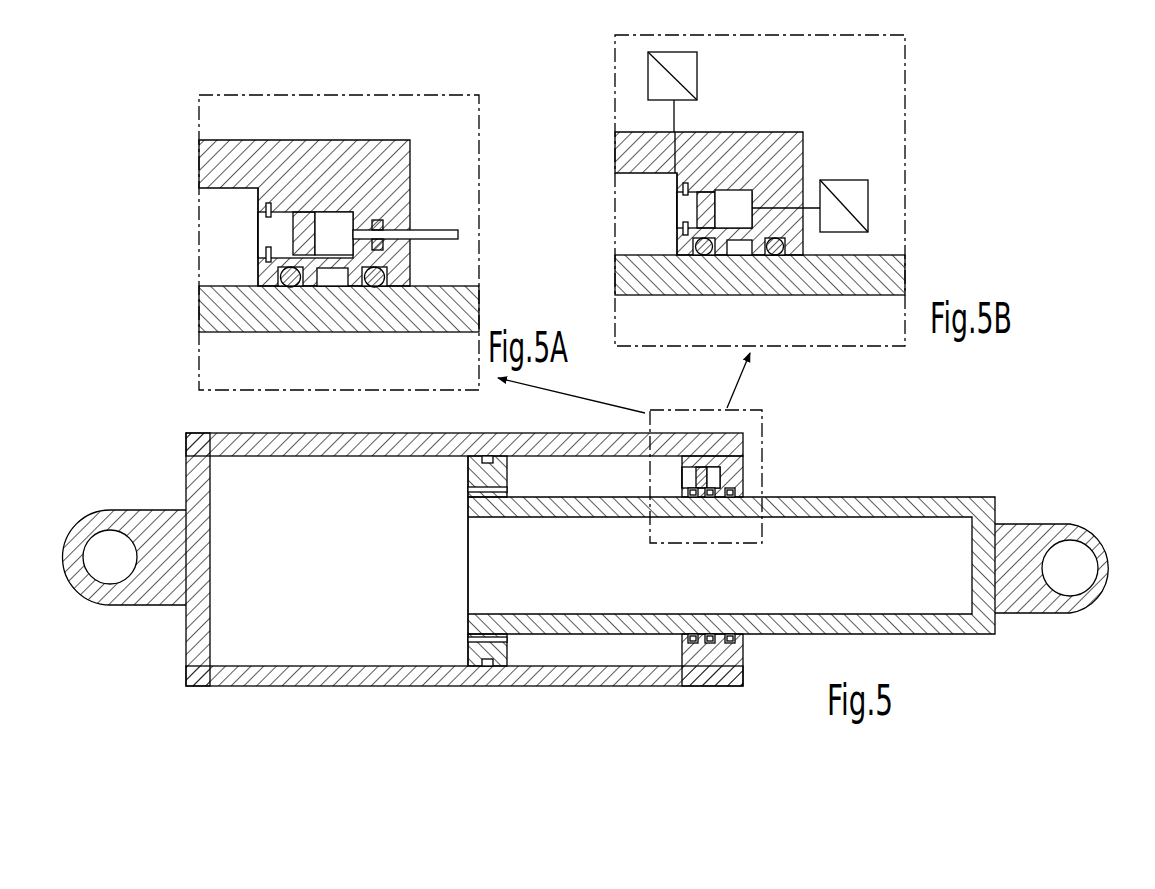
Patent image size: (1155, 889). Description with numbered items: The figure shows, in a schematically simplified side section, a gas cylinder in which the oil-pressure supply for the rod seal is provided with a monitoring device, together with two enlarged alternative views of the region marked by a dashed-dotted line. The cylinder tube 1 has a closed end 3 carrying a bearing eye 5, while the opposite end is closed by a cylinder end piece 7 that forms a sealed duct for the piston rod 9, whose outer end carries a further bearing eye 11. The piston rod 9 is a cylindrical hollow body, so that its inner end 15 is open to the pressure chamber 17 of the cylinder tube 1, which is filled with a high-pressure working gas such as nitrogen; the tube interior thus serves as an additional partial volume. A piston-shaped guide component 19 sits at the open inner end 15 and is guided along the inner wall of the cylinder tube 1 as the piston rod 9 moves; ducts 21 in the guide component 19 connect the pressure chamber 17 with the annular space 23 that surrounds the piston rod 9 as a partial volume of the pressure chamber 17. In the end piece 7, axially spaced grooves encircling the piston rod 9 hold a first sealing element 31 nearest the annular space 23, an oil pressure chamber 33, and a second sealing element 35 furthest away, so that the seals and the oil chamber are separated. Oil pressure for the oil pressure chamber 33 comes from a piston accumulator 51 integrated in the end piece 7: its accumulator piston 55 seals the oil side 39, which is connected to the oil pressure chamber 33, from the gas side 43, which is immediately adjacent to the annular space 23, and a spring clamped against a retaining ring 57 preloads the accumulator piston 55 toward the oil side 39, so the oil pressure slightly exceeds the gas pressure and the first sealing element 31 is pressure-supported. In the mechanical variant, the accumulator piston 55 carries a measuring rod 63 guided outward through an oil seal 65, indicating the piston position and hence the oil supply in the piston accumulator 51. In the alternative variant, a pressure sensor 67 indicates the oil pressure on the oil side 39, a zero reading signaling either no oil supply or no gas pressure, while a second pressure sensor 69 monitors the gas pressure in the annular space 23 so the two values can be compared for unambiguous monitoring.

In FIG. 5, the cylinder tube 1 is at (385, 444).
In FIG. 5A, the cylinder tube 1 is at (222, 166).
In FIG. 5B, the cylinder tube 1 is at (617, 156).
In FIG. 5, the closed end 3 is at (186, 456).
In FIG. 5, the bearing eye 5 is at (101, 572).
In FIG. 5, the cylinder end piece 7 is at (722, 658).
In FIG. 5A, the cylinder end piece 7 is at (410, 271).
In FIG. 5B, the cylinder end piece 7 is at (803, 153).
In FIG. 5, the piston rod 9 is at (850, 512).
In FIG. 5A, the piston rod 9 is at (455, 316).
In FIG. 5B, the piston rod 9 is at (640, 268).
In FIG. 5, the bearing eye 11 is at (1063, 549).
In FIG. 5, the inner end 15 is at (468, 512).
In FIG. 5, the pressure chamber 17 is at (306, 630).
In FIG. 5, the guide component 19 is at (468, 625).
In FIG. 5, the ducts 21 is at (468, 489).
In FIG. 5, the annular space 23 is at (602, 652).
In FIG. 5A, the annular space 23 is at (216, 213).
In FIG. 5B, the annular space 23 is at (634, 188).
In FIG. 5, the first sealing element 31 is at (692, 634).
In FIG. 5A, the first sealing element 31 is at (278, 287).
In FIG. 5B, the first sealing element 31 is at (700, 259).
In FIG. 5, the oil pressure chamber 33 is at (710, 634).
In FIG. 5A, the oil pressure chamber 33 is at (330, 287).
In FIG. 5B, the oil pressure chamber 33 is at (743, 258).
In FIG. 5, the second sealing element 35 is at (730, 634).
In FIG. 5A, the second sealing element 35 is at (372, 287).
In FIG. 5B, the second sealing element 35 is at (778, 259).
In FIG. 5, the oil side 39 is at (742, 437).
In FIG. 5A, the oil side 39 is at (367, 186).
In FIG. 5B, the oil side 39 is at (765, 132).
In FIG. 5, the gas side 43 is at (686, 478).
In FIG. 5A, the gas side 43 is at (282, 228).
In FIG. 5B, the gas side 43 is at (690, 208).
In FIG. 5, the piston accumulator 51 is at (720, 473).
In FIG. 5A, the piston accumulator 51 is at (345, 226).
In FIG. 5B, the piston accumulator 51 is at (735, 192).
In FIG. 5, the accumulator piston 55 is at (703, 467).
In FIG. 5A, the accumulator piston 55 is at (305, 231).
In FIG. 5B, the accumulator piston 55 is at (710, 192).
In FIG. 5A, the retaining ring 57 is at (258, 258).
In FIG. 5B, the retaining ring 57 is at (677, 226).
In FIG. 5A, the measuring rod 63 is at (436, 230).
In FIG. 5A, the oil seal 65 is at (383, 222).
In FIG. 5B, the pressure sensor 67 is at (868, 206).
In FIG. 5B, the second pressure sensor 69 is at (648, 78).